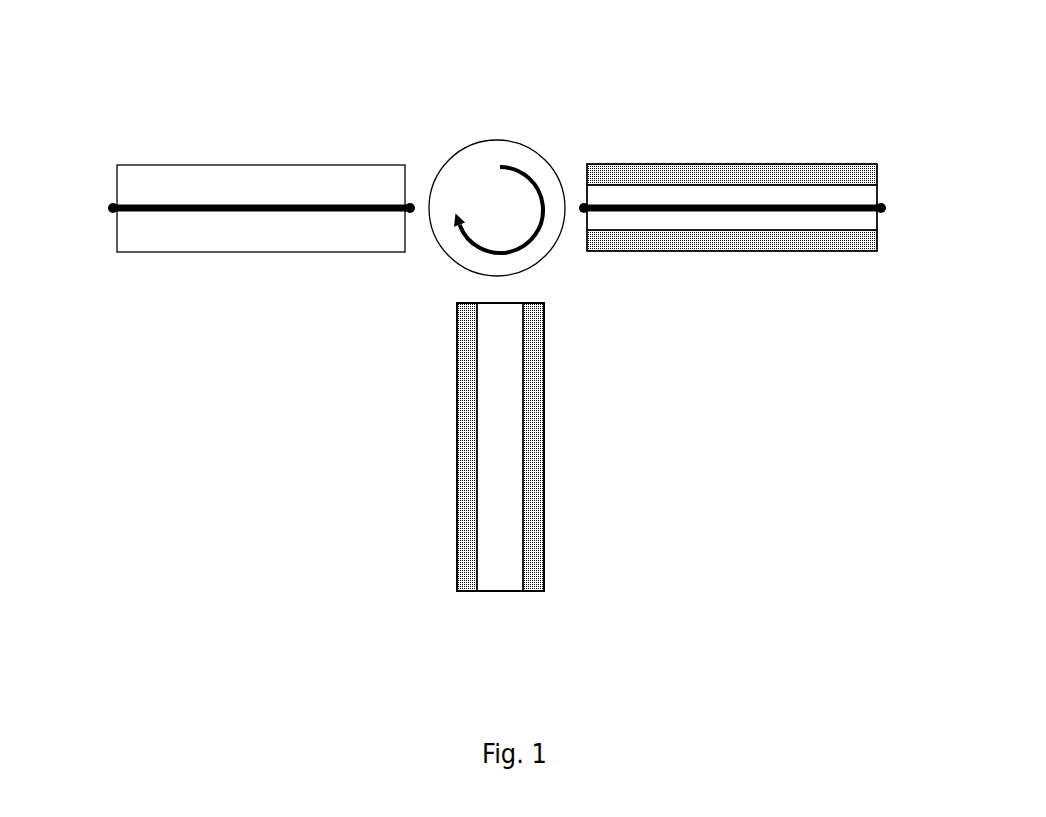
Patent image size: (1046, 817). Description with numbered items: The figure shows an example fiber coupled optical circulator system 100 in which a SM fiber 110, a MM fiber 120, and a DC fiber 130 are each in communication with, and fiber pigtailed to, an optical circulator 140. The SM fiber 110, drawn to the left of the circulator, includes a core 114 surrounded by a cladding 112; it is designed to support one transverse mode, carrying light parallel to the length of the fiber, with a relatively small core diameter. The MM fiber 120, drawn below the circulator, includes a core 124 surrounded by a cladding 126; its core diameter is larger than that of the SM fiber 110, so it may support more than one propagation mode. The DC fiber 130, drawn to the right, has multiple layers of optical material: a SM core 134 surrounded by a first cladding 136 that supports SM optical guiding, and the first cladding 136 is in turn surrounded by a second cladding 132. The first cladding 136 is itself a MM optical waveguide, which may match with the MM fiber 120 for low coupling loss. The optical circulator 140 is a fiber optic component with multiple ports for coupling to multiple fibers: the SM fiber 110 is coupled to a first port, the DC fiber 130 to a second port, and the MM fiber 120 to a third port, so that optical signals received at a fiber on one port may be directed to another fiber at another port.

The fiber coupled optical circulator system 100 is at (97, 87).
The SM fiber 110 is at (261, 225).
The cladding 112 is at (340, 185).
The core 114 is at (263, 203).
The MM fiber 120 is at (511, 447).
The core 124 is at (493, 390).
The cladding 126 is at (533, 447).
The DC fiber 130 is at (770, 213).
The second cladding 132 is at (655, 173).
The SM core 134 is at (763, 202).
The first cladding 136 is at (693, 193).
The optical circulator 140 is at (522, 142).